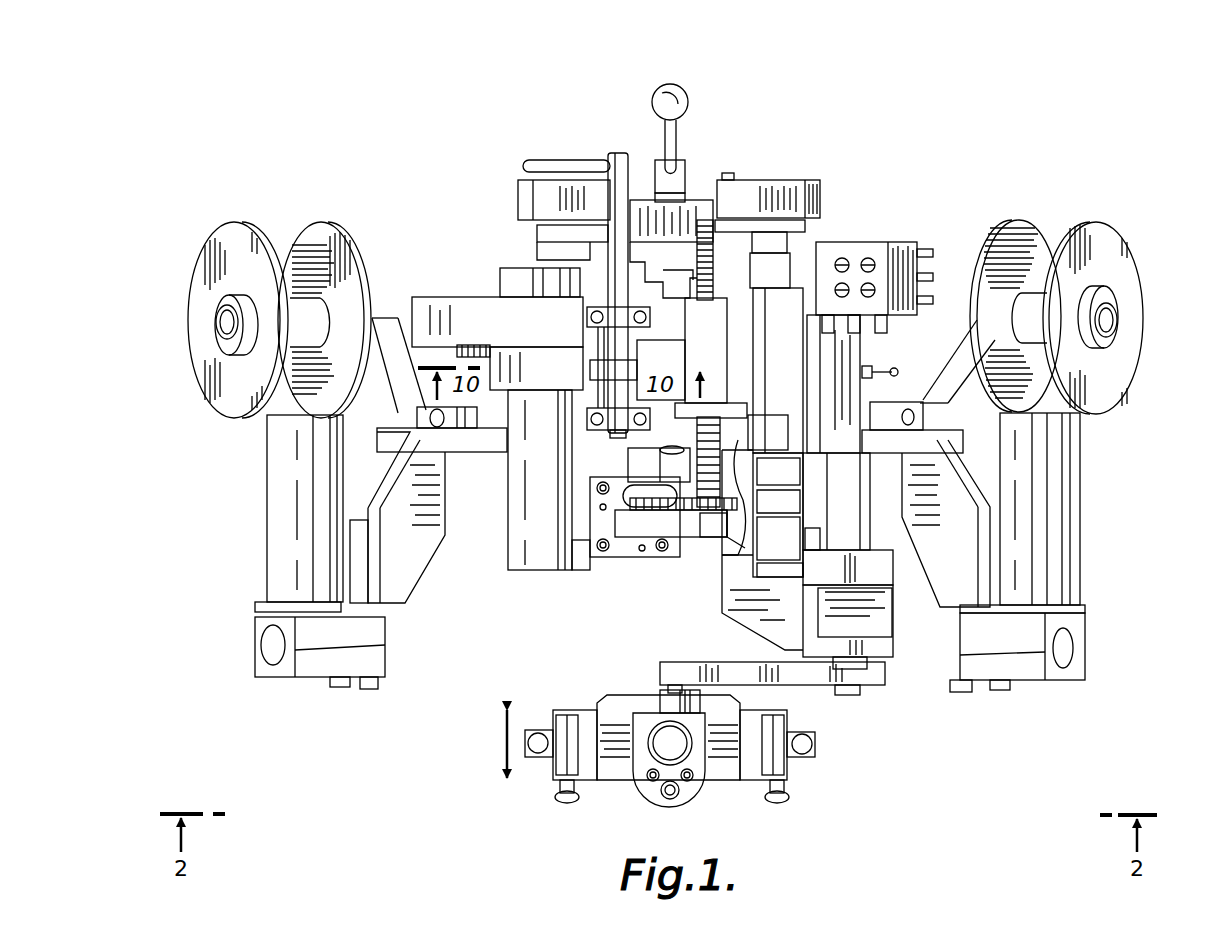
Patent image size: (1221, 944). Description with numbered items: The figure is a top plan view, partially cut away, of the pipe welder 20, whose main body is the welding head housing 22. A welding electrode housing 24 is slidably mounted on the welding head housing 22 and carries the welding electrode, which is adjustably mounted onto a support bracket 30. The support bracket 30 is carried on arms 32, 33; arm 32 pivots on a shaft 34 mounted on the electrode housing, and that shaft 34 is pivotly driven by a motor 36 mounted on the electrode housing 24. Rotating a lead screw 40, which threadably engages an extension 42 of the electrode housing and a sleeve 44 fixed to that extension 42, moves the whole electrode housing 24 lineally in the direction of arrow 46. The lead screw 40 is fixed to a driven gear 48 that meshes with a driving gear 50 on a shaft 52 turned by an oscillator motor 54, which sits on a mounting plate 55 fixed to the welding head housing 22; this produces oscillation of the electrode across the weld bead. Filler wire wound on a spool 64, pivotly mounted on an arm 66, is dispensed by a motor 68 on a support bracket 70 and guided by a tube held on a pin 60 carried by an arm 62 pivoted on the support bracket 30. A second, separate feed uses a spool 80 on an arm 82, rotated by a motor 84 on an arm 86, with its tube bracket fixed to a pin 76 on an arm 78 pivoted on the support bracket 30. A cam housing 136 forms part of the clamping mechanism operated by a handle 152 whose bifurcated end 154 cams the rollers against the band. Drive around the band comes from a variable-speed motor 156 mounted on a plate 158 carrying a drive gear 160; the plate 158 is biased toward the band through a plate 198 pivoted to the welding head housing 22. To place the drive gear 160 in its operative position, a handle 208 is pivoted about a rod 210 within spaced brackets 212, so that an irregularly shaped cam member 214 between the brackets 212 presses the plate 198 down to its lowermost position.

The pipe welder 20 is at (1112, 507).
The welding head housing 22 is at (577, 568).
The welding electrode housing 24 is at (884, 240).
The support bracket 30 is at (718, 778).
The arm 32 is at (812, 675).
The arm 33 is at (887, 674).
The shaft 34 is at (848, 690).
The motor 36 is at (855, 535).
The lead screw 40 is at (713, 227).
The extension 42 is at (705, 405).
The sleeve 44 is at (717, 330).
The arrow 46 is at (500, 742).
The driven gear 48 is at (712, 510).
The driving gear 50 is at (640, 505).
The shaft 52 is at (663, 490).
The oscillator motor 54 is at (637, 453).
The mounting plate 55 is at (605, 518).
The pin 60 is at (535, 758).
The arm 62 is at (560, 792).
The spool 64 is at (318, 307).
The arm 66 is at (375, 323).
The motor 68 is at (268, 542).
The support bracket 70 is at (410, 558).
The pin 76 is at (815, 752).
The arm 78 is at (785, 778).
The spool 80 is at (1130, 278).
The arm 82 is at (963, 352).
The motor 84 is at (1082, 462).
The arm 86 is at (968, 540).
The cam housing 136 is at (692, 203).
The handle 152 is at (678, 138).
The bifurcated end 154 is at (655, 160).
The motor 156 is at (533, 578).
The plate 158 is at (485, 300).
The drive gear 160 is at (468, 345).
The plate 198 is at (661, 370).
The handle 208 is at (563, 162).
The rod 210 is at (612, 283).
The brackets 212 is at (622, 317).
The cam member 214 is at (615, 370).